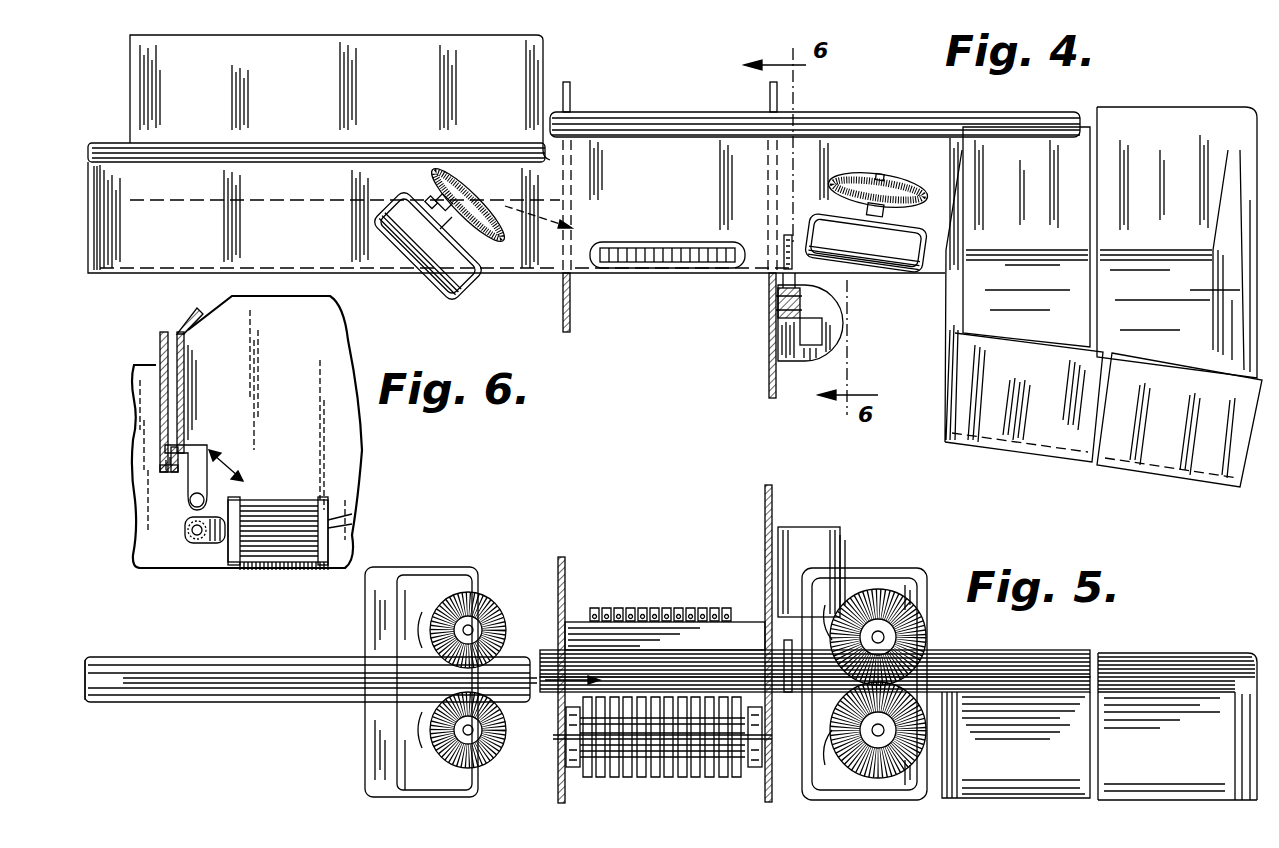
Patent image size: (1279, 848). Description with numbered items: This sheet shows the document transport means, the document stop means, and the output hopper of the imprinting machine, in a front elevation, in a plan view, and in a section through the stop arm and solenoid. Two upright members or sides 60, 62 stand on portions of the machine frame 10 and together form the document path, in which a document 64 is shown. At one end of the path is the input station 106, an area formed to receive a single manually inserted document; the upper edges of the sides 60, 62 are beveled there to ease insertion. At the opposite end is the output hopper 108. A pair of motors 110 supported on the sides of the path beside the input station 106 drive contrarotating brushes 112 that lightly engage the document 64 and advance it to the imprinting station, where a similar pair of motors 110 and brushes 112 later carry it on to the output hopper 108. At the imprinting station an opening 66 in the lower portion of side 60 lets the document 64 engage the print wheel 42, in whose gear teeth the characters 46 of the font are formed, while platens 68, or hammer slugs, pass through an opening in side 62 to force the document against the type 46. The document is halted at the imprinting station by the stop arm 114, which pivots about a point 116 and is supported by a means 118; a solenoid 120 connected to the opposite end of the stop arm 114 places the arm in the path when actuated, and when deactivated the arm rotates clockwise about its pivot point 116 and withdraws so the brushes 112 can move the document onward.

In FIG. 4, the machine frame 10 is at (572, 306).
In FIG. 5, the machine frame 10 is at (567, 594).
In FIG. 5, the print wheel 42 is at (735, 776).
In FIG. 5, the characters 46 is at (650, 776).
In FIG. 4, the upright member 60 is at (640, 130).
In FIG. 6, the upright member 60 is at (158, 346).
In FIG. 5, the upright member 60 is at (162, 703).
In FIG. 4, the upright member 62 is at (732, 112).
In FIG. 6, the upright member 62 is at (186, 376).
In FIG. 5, the upright member 62 is at (282, 646).
In FIG. 4, the document 64 is at (545, 42).
In FIG. 5, the document 64 is at (192, 678).
In FIG. 4, the opening 66 is at (640, 246).
In FIG. 4, the platens 68 is at (702, 228).
In FIG. 5, the platens 68 is at (672, 612).
In FIG. 4, the input station 106 is at (112, 138).
In FIG. 4, the output hopper 108 is at (1165, 333).
In FIG. 5, the output hopper 108 is at (1172, 757).
In FIG. 4, the motors 110 is at (465, 290).
In FIG. 5, the motors 110 is at (365, 614).
In FIG. 4, the brushes 112 is at (522, 186).
In FIG. 5, the brushes 112 is at (496, 628).
In FIG. 4, the stop arm 114 is at (784, 238).
In FIG. 6, the stop arm 114 is at (192, 448).
In FIG. 5, the stop arm 114 is at (762, 662).
In FIG. 4, the pivot point 116 is at (802, 306).
In FIG. 6, the pivot point 116 is at (190, 501).
In FIG. 5, the supporting means 118 is at (828, 527).
In FIG. 4, the solenoid 120 is at (835, 328).
In FIG. 6, the solenoid 120 is at (302, 503).
In FIG. 5, the solenoid 120 is at (842, 546).